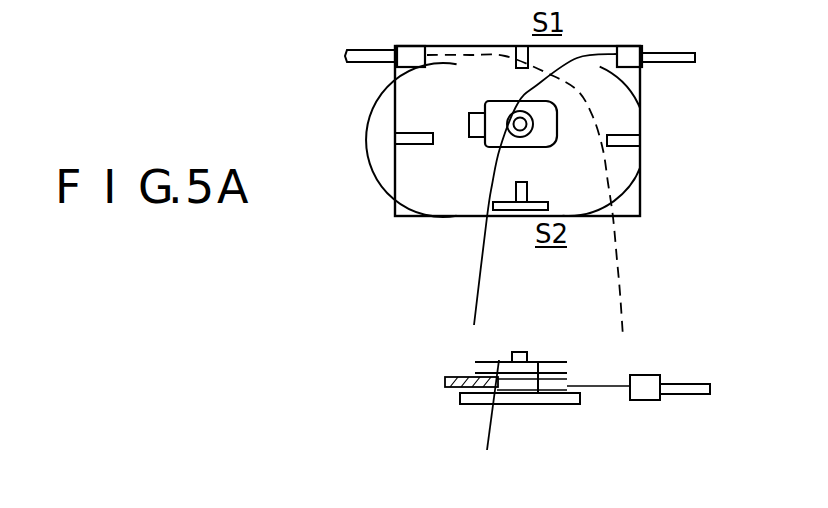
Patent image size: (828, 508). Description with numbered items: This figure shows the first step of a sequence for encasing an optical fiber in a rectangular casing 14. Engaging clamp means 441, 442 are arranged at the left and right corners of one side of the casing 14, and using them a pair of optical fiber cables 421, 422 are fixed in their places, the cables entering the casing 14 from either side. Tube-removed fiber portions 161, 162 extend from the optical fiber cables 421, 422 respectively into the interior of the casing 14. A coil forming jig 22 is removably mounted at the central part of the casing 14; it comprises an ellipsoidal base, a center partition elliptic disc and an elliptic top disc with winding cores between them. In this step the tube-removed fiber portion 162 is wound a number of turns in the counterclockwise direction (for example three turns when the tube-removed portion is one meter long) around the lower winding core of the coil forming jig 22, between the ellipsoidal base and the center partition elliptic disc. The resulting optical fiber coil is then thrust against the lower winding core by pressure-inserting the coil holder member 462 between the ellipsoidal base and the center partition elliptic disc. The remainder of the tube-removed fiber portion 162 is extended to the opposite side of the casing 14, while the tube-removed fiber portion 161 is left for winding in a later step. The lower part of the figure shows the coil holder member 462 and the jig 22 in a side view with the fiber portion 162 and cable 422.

The rectangular casing 14 is at (630, 84).
The coil forming jig 22 is at (500, 102).
The optical fiber cable 421 is at (365, 52).
The optical fiber cable 422 is at (690, 383).
The engaging clamp means 441 is at (415, 50).
The engaging clamp means 442 is at (627, 49).
The coil holder member 462 is at (445, 379).
The tube-removed fiber portion 161 is at (617, 263).
The tube-removed fiber portion 162 is at (600, 385).